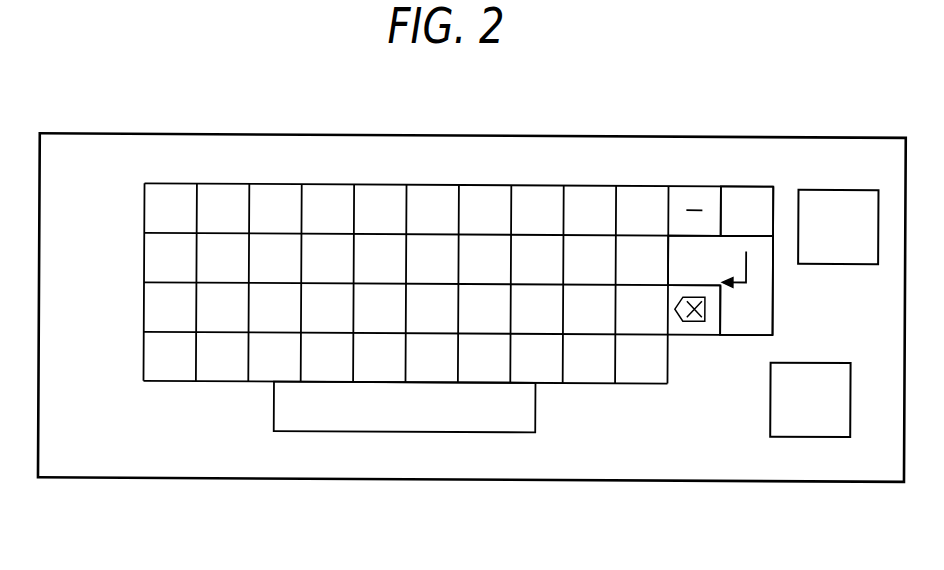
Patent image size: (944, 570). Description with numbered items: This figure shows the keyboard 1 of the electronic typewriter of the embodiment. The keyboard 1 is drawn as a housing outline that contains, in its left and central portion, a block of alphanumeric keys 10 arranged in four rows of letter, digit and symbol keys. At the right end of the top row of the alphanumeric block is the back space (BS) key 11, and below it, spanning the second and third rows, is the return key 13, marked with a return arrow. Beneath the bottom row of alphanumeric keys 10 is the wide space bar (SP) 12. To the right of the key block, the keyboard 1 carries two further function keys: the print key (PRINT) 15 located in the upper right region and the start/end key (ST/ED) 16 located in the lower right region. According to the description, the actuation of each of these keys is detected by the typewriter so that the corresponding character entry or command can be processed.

The keyboard 1 is at (467, 136).
The alphanumeric keys 10 is at (144, 208).
The back space (BS) key 11 is at (744, 195).
The space bar (SP) 12 is at (342, 422).
The return key 13 is at (758, 308).
The print key (PRINT) 15 is at (843, 195).
The start/end key (ST/ED) 16 is at (797, 423).